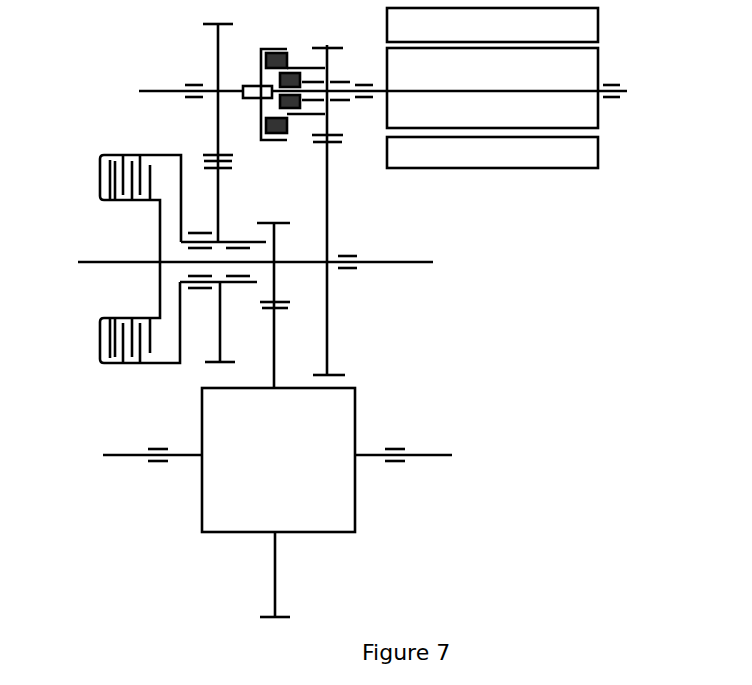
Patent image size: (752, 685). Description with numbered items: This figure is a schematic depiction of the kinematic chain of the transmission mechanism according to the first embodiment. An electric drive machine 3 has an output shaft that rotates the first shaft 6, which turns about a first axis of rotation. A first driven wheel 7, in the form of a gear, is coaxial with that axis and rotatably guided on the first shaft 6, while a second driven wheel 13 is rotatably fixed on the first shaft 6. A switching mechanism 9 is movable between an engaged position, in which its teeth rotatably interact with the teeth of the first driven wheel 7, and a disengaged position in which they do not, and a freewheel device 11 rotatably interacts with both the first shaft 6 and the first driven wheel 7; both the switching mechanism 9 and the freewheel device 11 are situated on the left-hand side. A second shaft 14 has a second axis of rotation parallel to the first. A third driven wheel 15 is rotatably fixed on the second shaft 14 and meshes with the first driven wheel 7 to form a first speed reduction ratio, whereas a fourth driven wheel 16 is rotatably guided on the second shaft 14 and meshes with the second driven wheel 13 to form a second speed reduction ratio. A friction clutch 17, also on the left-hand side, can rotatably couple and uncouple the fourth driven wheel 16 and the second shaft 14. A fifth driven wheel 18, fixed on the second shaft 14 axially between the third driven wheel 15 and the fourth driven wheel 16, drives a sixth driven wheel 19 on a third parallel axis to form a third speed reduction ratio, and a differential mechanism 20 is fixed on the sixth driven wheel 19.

The electric drive machine 3 is at (494, 171).
The first shaft 6 is at (128, 92).
The first driven wheel 7 is at (338, 135).
The switching mechanism 9 is at (280, 137).
The freewheel device 11 is at (301, 105).
The second driven wheel 13 is at (207, 62).
The second shaft 14 is at (78, 262).
The third driven wheel 15 is at (331, 334).
The fourth driven wheel 16 is at (208, 363).
The friction clutch 17 is at (133, 374).
The fifth driven wheel 18 is at (277, 219).
The sixth driven wheel 19 is at (280, 578).
The differential mechanism 20 is at (357, 508).